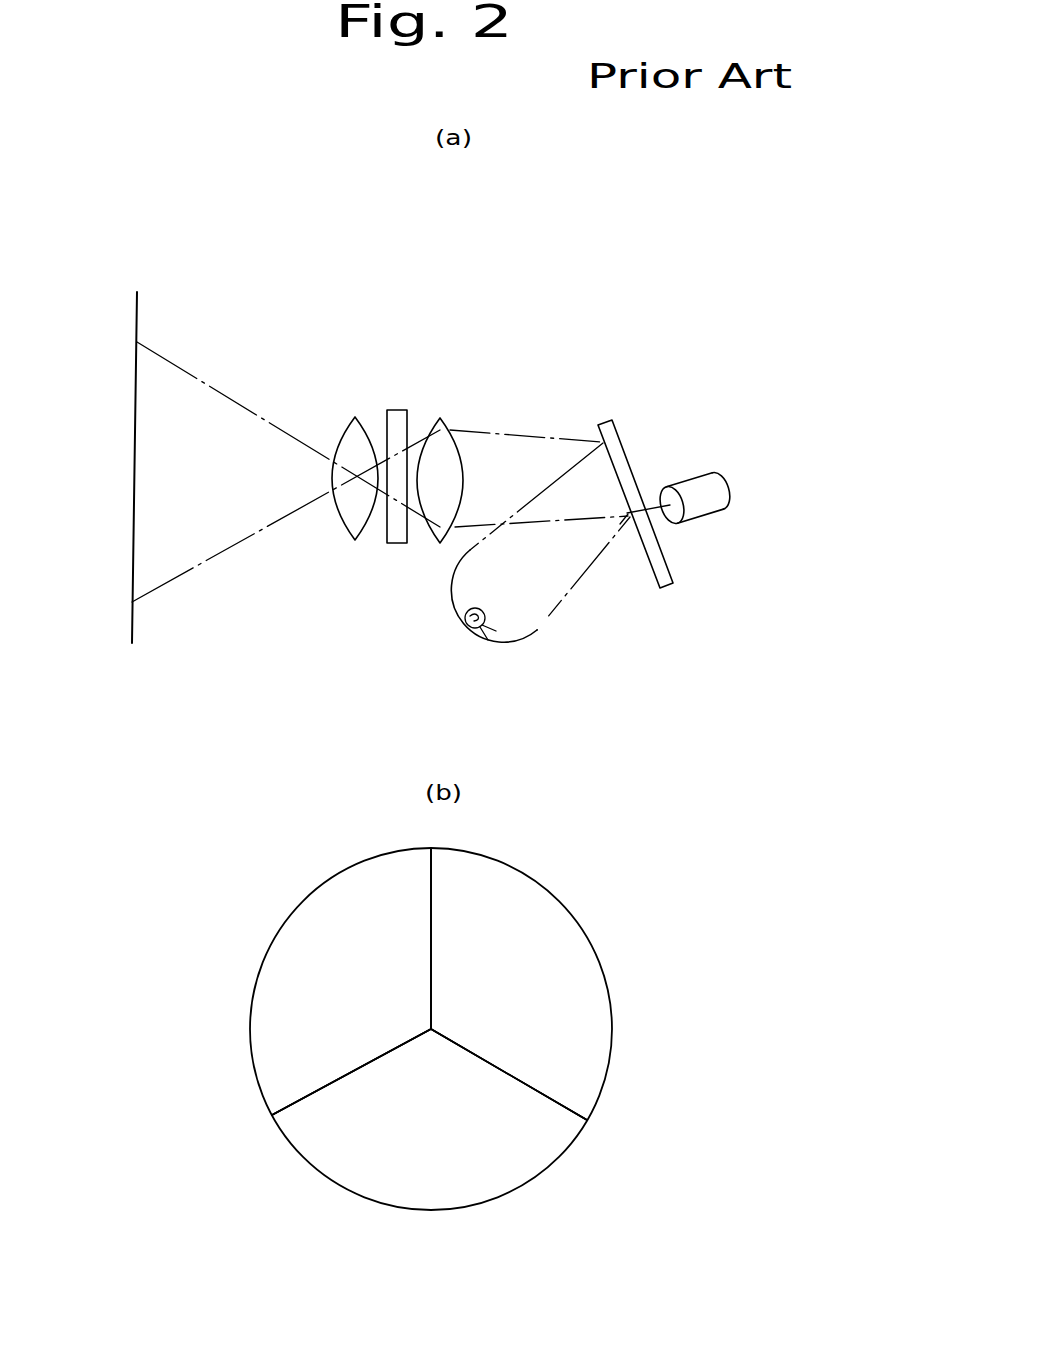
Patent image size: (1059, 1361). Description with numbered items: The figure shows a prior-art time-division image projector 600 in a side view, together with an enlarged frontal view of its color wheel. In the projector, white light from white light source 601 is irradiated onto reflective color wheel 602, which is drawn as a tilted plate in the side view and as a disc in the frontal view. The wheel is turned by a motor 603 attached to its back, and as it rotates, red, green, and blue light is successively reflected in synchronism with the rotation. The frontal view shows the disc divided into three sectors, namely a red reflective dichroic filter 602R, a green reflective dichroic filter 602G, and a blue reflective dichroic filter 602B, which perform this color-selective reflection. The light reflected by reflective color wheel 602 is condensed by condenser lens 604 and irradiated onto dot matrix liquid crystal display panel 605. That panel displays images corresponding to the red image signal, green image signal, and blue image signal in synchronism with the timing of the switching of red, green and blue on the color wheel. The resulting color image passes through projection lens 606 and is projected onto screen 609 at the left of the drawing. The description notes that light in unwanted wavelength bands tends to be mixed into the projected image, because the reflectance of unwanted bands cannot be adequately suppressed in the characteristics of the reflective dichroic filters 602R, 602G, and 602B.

The time-division image projector 600 is at (560, 378).
The white light source 601 is at (469, 628).
The reflective color wheel 602 is at (661, 586).
The red reflective dichroic filter 602R is at (307, 920).
The green reflective dichroic filter 602G is at (390, 1177).
The blue reflective dichroic filter 602B is at (538, 925).
The motor 603 is at (722, 483).
The condenser lens 604 is at (438, 544).
The dot matrix liquid crystal display panel 605 is at (393, 543).
The projection lens 606 is at (348, 542).
The screen 609 is at (137, 307).